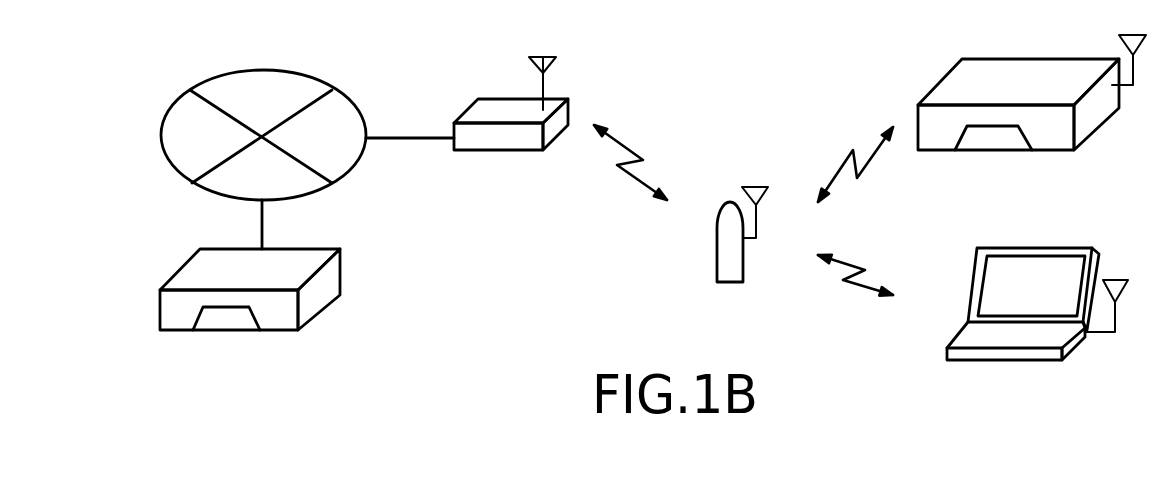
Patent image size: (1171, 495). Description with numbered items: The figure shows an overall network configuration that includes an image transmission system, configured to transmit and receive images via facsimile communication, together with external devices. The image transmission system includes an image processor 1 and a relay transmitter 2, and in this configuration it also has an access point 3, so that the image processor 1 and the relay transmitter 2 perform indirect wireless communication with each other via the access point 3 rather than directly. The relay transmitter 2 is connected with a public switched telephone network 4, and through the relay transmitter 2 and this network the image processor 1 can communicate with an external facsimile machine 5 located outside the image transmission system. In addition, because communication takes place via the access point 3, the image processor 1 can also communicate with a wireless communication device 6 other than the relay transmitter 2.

The image processor 1 is at (1042, 150).
The relay transmitter 2 is at (518, 150).
The access point 3 is at (728, 282).
The public switched telephone network 4 is at (313, 77).
The external facsimile machine 5 is at (313, 248).
The wireless communication device 6 is at (1043, 360).